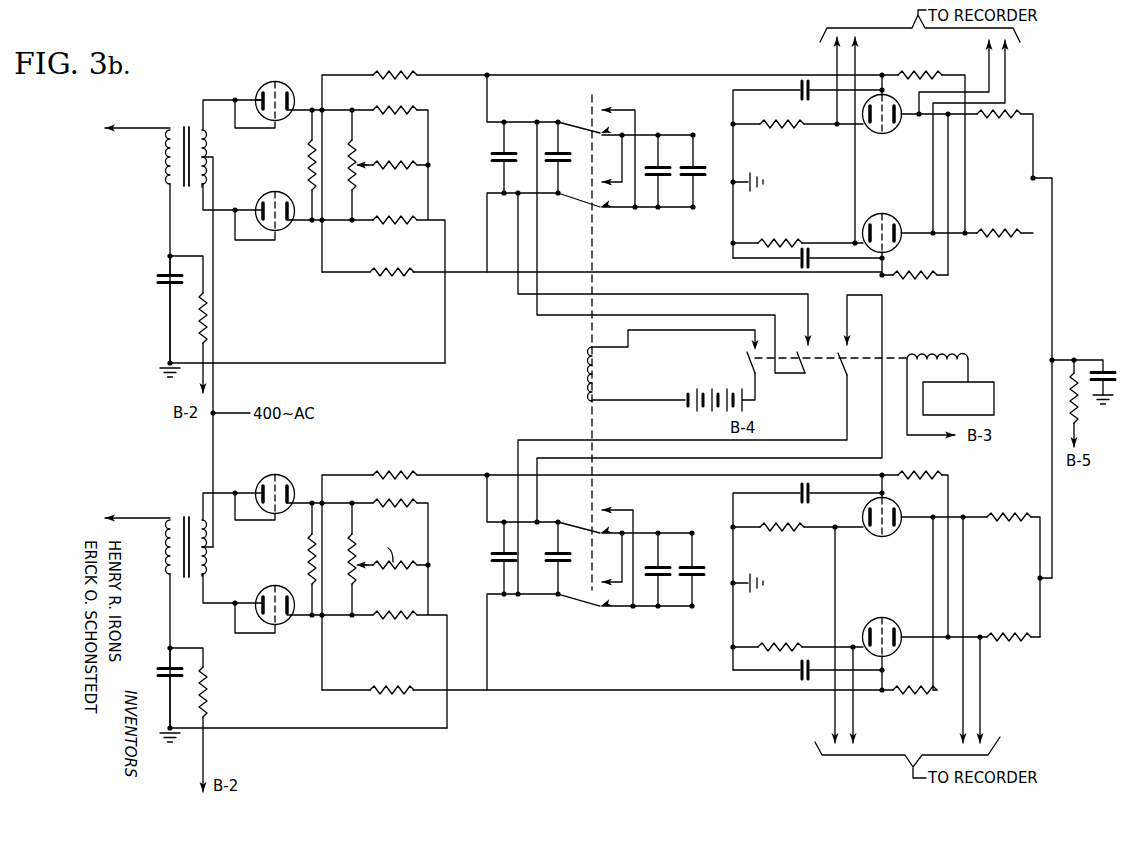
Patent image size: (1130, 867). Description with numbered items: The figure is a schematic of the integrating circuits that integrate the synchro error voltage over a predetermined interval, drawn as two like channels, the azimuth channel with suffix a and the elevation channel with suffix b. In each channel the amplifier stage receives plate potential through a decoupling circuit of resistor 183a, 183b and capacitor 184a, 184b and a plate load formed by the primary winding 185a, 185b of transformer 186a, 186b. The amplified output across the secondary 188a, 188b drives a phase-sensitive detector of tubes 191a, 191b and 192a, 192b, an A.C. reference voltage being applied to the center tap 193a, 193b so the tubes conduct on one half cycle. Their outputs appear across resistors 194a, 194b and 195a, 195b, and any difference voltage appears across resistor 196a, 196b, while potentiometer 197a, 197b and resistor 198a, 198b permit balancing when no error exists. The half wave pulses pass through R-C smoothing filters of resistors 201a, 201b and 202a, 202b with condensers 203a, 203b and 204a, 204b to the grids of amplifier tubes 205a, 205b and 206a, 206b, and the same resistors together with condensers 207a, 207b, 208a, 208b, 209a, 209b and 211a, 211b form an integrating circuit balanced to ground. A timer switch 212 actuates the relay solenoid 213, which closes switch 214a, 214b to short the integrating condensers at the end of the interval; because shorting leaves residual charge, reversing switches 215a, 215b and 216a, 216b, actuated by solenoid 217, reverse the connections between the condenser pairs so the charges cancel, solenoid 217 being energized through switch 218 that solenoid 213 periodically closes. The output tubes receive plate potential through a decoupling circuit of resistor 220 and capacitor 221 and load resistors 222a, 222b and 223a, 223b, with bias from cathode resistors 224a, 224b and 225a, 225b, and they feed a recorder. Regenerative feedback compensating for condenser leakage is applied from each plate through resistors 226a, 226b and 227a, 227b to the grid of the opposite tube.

The resistor 183a is at (205, 325).
The resistor 183b is at (205, 688).
The capacitor 184a is at (165, 283).
The capacitor 184b is at (178, 665).
The primary winding 185a is at (168, 158).
The primary winding 185b is at (168, 545).
The transformer 186a is at (188, 128).
The transformer 186b is at (188, 518).
The secondary 188a is at (200, 185).
The secondary 188b is at (205, 570).
The tube 191a is at (272, 82).
The tube 191b is at (270, 475).
The tube 192a is at (265, 190).
The tube 192b is at (265, 585).
The center tap 193a is at (230, 157).
The center tap 193b is at (210, 547).
The resistor 194a is at (380, 108).
The resistor 194b is at (398, 508).
The resistor 195a is at (375, 218).
The resistor 195b is at (375, 613).
The resistor 196a is at (302, 163).
The resistor 196b is at (310, 535).
The potentiometer 197a is at (355, 140).
The potentiometer 197b is at (355, 535).
The resistor 198a is at (393, 162).
The resistor 198b is at (395, 550).
The resistor 201a is at (378, 73).
The resistor 201b is at (378, 473).
The resistor 202a is at (378, 275).
The resistor 202b is at (378, 687).
The condenser 203a is at (805, 80).
The condenser 203b is at (800, 503).
The condenser 204a is at (808, 250).
The condenser 204b is at (797, 673).
The amplifier tube 205a is at (878, 134).
The amplifier tube 205b is at (884, 500).
The amplifier tube 206a is at (868, 220).
The amplifier tube 206b is at (872, 618).
The condenser 207a is at (500, 163).
The condenser 207b is at (498, 553).
The condenser 208a is at (560, 148).
The condenser 208b is at (556, 570).
The condenser 209a is at (660, 165).
The condenser 209b is at (660, 580).
The condenser 211a is at (694, 178).
The condenser 211b is at (693, 562).
The timer switch 212 is at (988, 388).
The relay solenoid 213 is at (933, 353).
The switch 214a is at (802, 363).
The switch 214b is at (850, 343).
The reversing switch 215a is at (603, 110).
The reversing switch 215b is at (603, 510).
The reversing switch 216a is at (603, 209).
The reversing switch 216b is at (603, 608).
The solenoid 217 is at (596, 368).
The switch 218 is at (745, 360).
The resistor 220 is at (1078, 413).
The capacitor 221 is at (1110, 372).
The load resistor 222a is at (1012, 112).
The load resistor 222b is at (992, 512).
The load resistor 223a is at (995, 236).
The load resistor 223b is at (990, 640).
The cathode resistor 224a is at (780, 127).
The cathode resistor 224b is at (778, 530).
The cathode resistor 225a is at (787, 220).
The cathode resistor 225b is at (785, 645).
The resistor 226a is at (915, 278).
The resistor 226b is at (908, 692).
The resistor 227a is at (905, 73).
The resistor 227b is at (905, 473).